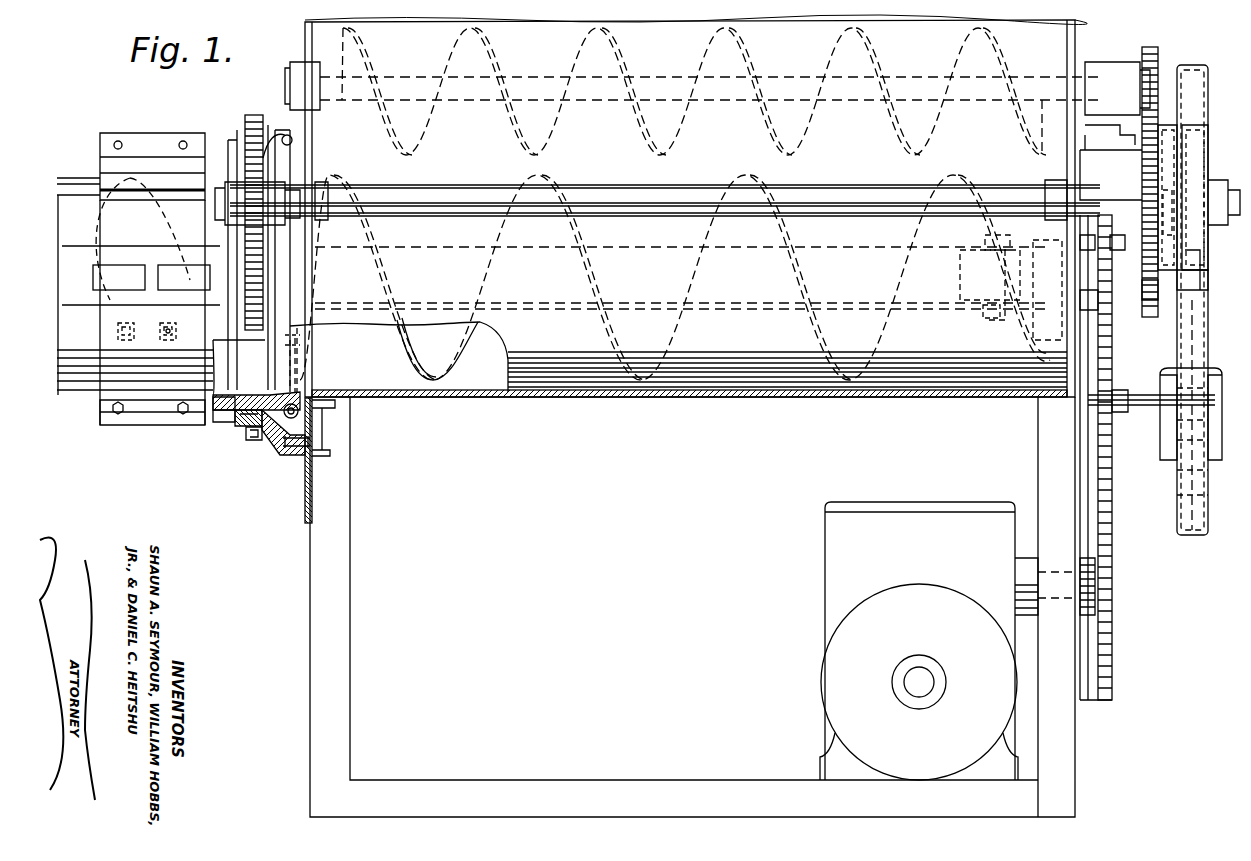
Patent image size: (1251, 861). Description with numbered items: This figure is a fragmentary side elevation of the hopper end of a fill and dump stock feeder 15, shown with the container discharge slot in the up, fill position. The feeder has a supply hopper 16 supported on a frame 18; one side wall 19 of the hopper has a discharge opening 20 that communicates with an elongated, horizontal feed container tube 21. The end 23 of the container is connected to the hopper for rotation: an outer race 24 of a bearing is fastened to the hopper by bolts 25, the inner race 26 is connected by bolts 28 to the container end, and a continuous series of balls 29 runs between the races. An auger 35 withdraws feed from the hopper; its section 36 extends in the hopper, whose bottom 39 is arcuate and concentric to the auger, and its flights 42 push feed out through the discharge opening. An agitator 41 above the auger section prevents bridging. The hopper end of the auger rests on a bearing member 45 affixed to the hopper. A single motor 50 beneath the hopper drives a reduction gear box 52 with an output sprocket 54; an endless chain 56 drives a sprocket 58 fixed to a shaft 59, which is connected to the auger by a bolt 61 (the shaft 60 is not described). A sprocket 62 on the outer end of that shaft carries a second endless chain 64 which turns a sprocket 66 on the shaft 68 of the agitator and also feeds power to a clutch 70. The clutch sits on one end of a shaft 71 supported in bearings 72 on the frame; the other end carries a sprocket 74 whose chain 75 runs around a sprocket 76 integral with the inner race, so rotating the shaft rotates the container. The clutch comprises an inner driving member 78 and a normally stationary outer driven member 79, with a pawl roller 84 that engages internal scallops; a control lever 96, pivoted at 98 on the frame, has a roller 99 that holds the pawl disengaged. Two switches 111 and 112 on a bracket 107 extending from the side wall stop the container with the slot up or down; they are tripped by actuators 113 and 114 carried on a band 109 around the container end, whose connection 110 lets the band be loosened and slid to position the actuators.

The stock feeder 15 is at (238, 492).
The supply hopper 16 is at (1077, 38).
The frame 18 is at (345, 625).
The side wall 19 is at (305, 495).
The discharge opening 20 is at (300, 370).
The feed container tube 21 is at (75, 378).
The end of container 23 is at (225, 395).
The outer race 24 is at (298, 450).
The bolts 25 is at (318, 432).
The inner race 26 is at (245, 426).
The bolts 28 is at (213, 420).
The balls 29 is at (290, 392).
The auger 35 is at (96, 195).
The auger section 36 is at (668, 330).
The hopper bottom 39 is at (660, 397).
The agitator 41 is at (805, 128).
The flights 42 is at (615, 330).
The bearing member 45 is at (1040, 320).
The motor 50 is at (836, 680).
The reduction gear box 52 is at (828, 550).
The power output sprocket 54 is at (1112, 600).
The endless chain 56 is at (1112, 365).
The sprocket 58 is at (1104, 334).
The shaft 59 is at (1025, 250).
The lower shaft 60 is at (865, 247).
The bolt 61 is at (978, 318).
The sprocket 62 is at (1150, 318).
The endless chain 64 is at (1140, 125).
The sprocket 66 is at (1160, 57).
The agitator shaft 68 is at (920, 88).
The clutch 70 is at (1195, 94).
The shaft 71 is at (628, 185).
The bearings 72 is at (325, 185).
The sprocket 74 is at (228, 205).
The chain 75 is at (250, 116).
The sprocket 76 is at (254, 440).
The inner driving clutch member 78 is at (1168, 125).
The outer driven clutch member 79 is at (1195, 125).
The roller 84 is at (1169, 192).
The clutch control lever 96 is at (1178, 498).
The pivot 98 is at (1136, 405).
The roller 99 is at (1208, 283).
The bracket 107 is at (302, 338).
The band 109 is at (108, 322).
The connection 110 is at (140, 415).
The switch 111 is at (168, 322).
The switch 112 is at (126, 322).
The actuator 113 is at (190, 265).
The actuator 114 is at (118, 265).